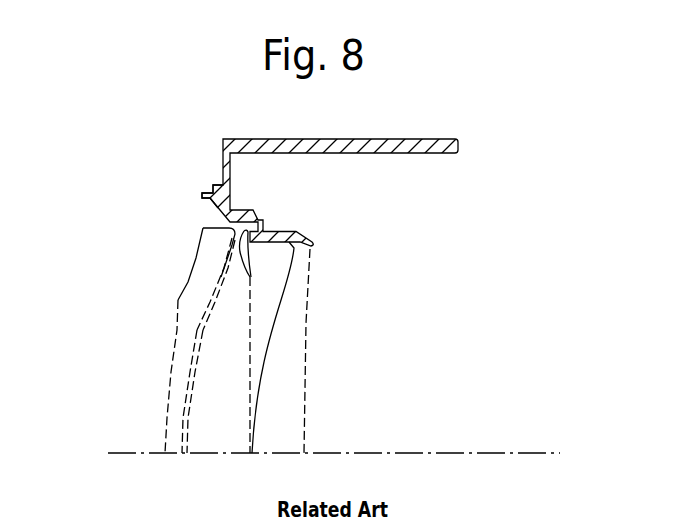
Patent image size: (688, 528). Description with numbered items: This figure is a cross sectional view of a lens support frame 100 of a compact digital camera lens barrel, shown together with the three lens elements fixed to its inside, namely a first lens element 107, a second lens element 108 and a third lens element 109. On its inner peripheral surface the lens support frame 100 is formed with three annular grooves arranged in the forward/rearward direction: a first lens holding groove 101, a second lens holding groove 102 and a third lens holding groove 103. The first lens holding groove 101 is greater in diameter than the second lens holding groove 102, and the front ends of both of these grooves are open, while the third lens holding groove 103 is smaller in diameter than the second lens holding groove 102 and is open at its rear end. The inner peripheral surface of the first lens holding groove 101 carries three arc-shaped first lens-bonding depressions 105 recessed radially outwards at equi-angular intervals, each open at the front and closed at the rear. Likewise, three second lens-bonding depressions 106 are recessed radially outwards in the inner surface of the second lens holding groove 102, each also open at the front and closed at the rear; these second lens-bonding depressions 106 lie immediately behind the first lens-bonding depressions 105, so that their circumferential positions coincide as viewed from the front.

The lens support frame 100 is at (378, 143).
The first lens holding groove 101 is at (213, 233).
The second lens holding groove 102 is at (244, 232).
The third lens holding groove 103 is at (308, 255).
The first lens-bonding depression 105 is at (215, 208).
The second lens-bonding depression 106 is at (218, 283).
The first lens element 107 is at (180, 354).
The second lens element 108 is at (202, 413).
The third lens element 109 is at (292, 393).